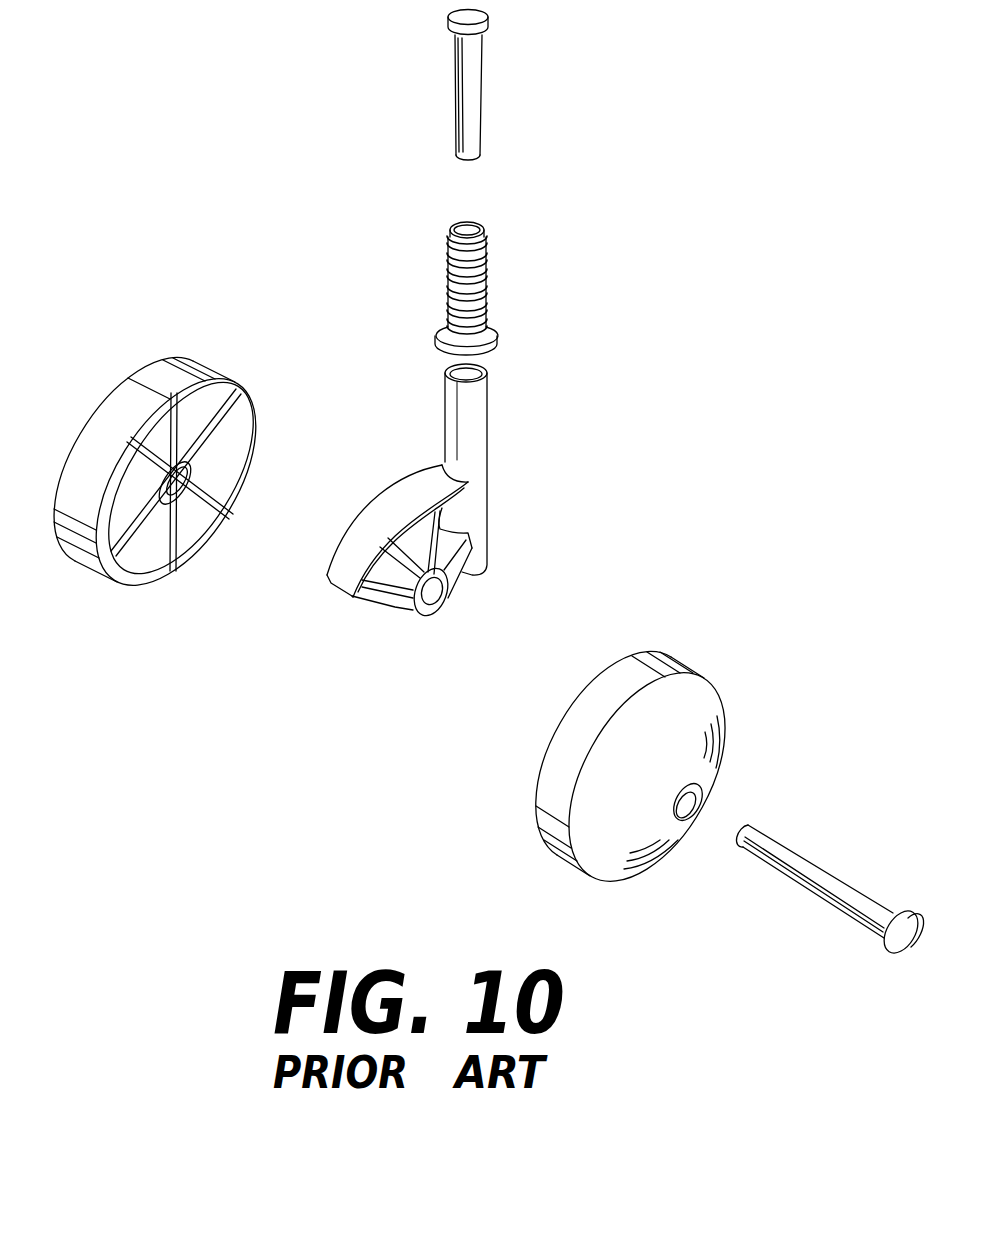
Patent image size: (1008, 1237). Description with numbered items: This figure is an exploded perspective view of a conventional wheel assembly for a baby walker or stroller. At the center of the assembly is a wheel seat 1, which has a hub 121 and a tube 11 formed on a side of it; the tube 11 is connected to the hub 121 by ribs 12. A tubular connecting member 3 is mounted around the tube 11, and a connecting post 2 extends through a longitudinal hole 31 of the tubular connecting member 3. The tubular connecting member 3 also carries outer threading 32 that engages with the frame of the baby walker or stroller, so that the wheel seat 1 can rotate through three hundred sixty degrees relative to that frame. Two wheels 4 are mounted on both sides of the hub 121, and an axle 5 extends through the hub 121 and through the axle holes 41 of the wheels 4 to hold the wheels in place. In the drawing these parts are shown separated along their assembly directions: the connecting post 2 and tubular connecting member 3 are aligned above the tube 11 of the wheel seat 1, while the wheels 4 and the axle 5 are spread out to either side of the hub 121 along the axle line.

The wheel seat 1 is at (464, 570).
The connecting post 2 is at (542, 63).
The tubular connecting member 3 is at (471, 248).
The longitudinal hole 31 is at (468, 230).
The outer threading 32 is at (562, 217).
The tube 11 is at (555, 373).
The ribs 12 is at (468, 547).
The hub 121 is at (437, 597).
The wheels 4 is at (664, 758).
The axle holes 41 is at (700, 792).
The axle 5 is at (853, 789).